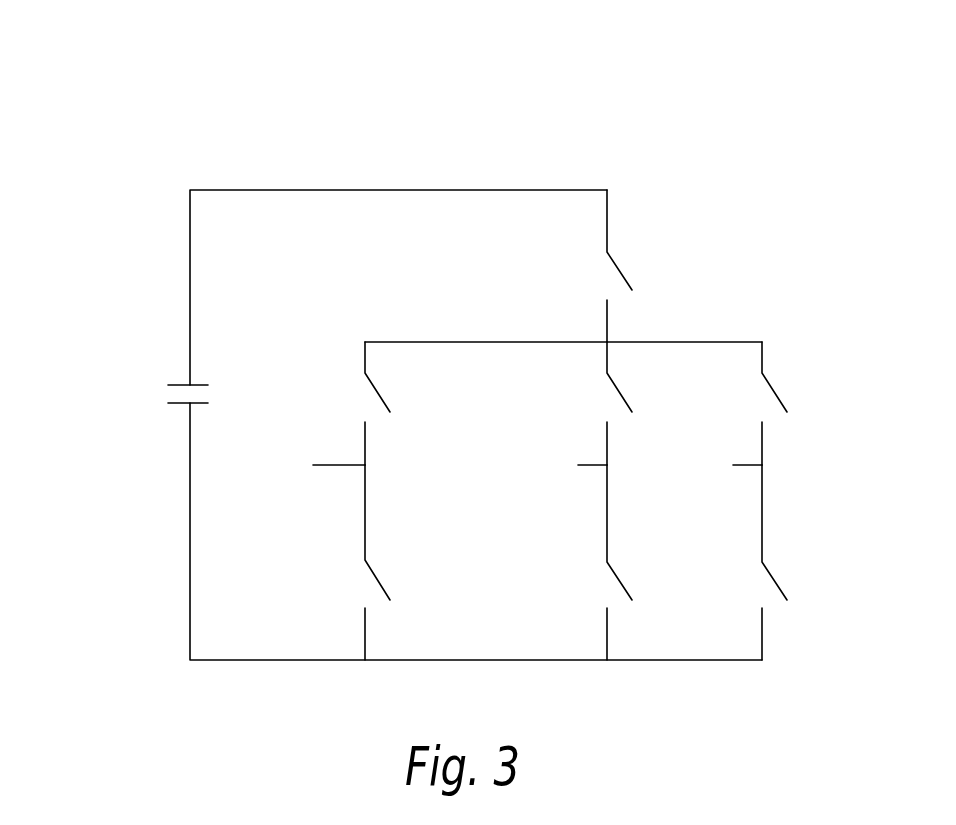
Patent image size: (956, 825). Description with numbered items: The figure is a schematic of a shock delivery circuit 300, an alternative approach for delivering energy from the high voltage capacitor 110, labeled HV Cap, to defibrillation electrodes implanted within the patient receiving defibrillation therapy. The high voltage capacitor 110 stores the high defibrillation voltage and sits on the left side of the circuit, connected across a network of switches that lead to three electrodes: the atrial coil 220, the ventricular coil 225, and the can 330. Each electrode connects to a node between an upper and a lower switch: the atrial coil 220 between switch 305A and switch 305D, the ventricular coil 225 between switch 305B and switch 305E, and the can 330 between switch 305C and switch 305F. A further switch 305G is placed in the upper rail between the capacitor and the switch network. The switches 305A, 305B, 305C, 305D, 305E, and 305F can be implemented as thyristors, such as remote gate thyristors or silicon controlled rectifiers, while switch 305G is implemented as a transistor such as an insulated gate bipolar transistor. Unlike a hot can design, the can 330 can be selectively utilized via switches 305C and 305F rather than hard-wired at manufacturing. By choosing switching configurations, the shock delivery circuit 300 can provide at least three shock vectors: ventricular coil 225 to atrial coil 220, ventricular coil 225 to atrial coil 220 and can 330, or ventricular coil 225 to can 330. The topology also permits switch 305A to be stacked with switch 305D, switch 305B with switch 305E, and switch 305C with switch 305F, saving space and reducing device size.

The shock delivery circuit 300 is at (138, 94).
The high voltage capacitor 110 is at (196, 383).
The switch 305A is at (380, 399).
The switch 305B is at (622, 399).
The switch 305C is at (777, 399).
The switch 305D is at (380, 588).
The switch 305E is at (622, 588).
The switch 305F is at (777, 588).
The switch 305G is at (622, 277).
The atrial coil 220 is at (273, 505).
The ventricular coil 225 is at (537, 505).
The can 330 is at (705, 491).